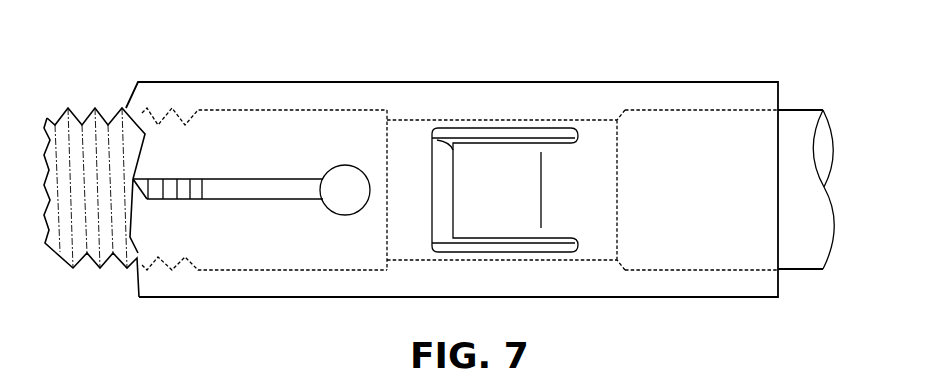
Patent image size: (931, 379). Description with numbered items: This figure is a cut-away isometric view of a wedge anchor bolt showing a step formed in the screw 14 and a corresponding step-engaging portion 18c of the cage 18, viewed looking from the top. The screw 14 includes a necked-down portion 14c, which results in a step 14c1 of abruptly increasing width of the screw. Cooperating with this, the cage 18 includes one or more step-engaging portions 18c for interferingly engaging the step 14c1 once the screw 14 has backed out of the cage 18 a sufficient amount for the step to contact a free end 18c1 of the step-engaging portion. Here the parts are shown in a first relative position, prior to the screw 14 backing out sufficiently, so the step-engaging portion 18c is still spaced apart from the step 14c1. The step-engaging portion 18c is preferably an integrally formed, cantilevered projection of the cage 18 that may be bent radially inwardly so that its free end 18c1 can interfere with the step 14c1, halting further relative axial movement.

The screw 14 is at (800, 108).
The cage 18 is at (647, 82).
The necked-down portion 14c is at (597, 186).
The step 14c1 is at (387, 112).
The step-engaging portion 18c is at (513, 202).
The free end 18c1 is at (453, 148).